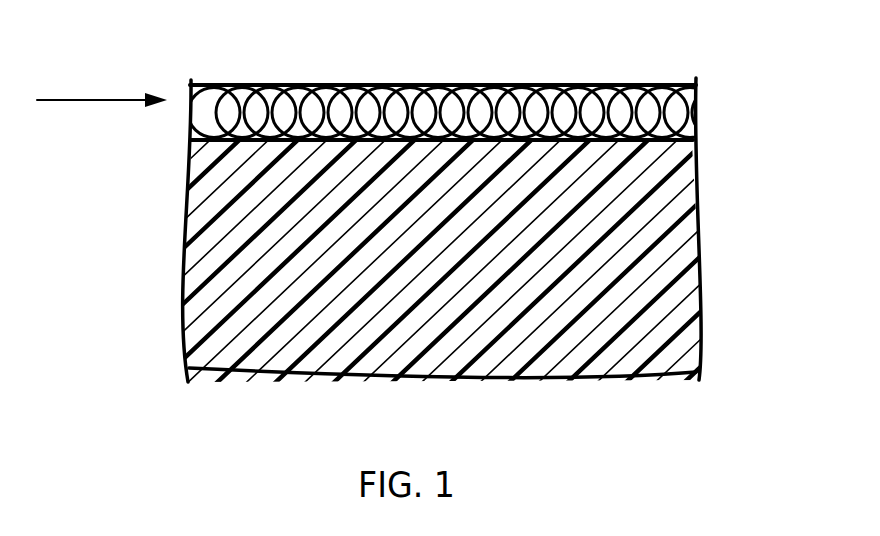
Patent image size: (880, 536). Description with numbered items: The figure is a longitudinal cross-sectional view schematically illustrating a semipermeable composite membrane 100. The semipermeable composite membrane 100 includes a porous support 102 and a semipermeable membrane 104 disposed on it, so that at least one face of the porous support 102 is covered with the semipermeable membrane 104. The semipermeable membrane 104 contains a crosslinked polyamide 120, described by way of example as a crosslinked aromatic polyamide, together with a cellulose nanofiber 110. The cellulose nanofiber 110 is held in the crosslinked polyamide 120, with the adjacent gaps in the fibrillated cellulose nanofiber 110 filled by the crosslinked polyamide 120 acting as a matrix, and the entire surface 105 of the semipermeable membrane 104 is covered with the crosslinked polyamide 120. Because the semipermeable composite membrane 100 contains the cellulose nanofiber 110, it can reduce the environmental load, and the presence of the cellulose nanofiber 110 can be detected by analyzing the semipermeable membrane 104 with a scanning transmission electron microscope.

The semipermeable composite membrane 100 is at (703, 68).
The porous support 102 is at (688, 243).
The semipermeable membrane 104 is at (482, 83).
The surface 105 is at (312, 84).
The cellulose nanofiber 110 is at (538, 84).
The crosslinked polyamide 120 is at (391, 84).